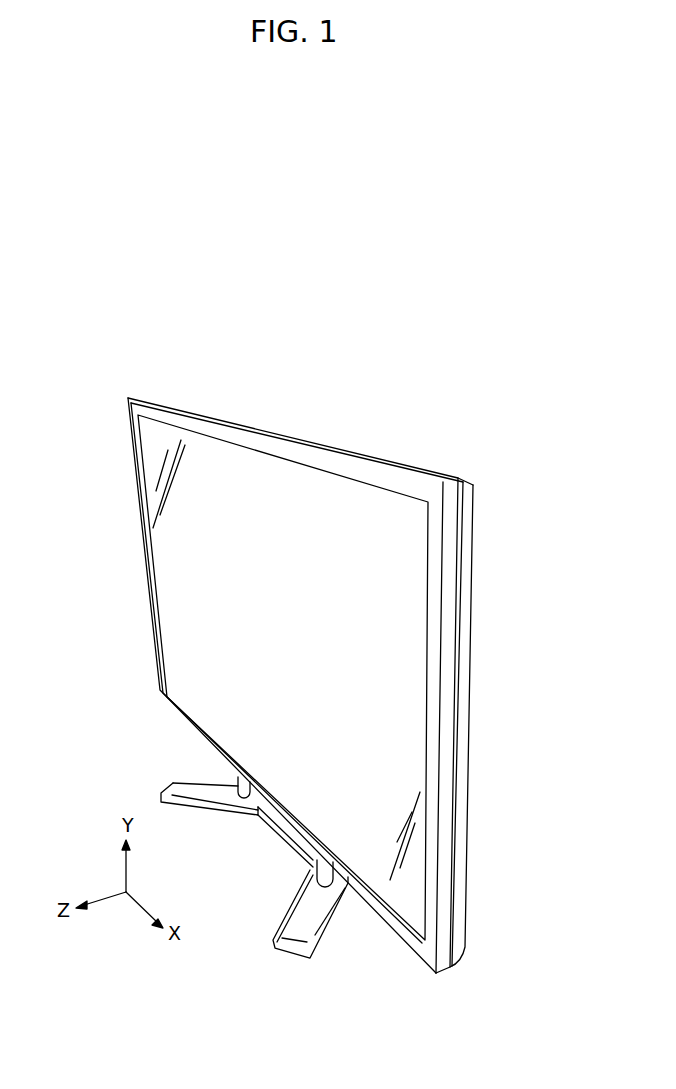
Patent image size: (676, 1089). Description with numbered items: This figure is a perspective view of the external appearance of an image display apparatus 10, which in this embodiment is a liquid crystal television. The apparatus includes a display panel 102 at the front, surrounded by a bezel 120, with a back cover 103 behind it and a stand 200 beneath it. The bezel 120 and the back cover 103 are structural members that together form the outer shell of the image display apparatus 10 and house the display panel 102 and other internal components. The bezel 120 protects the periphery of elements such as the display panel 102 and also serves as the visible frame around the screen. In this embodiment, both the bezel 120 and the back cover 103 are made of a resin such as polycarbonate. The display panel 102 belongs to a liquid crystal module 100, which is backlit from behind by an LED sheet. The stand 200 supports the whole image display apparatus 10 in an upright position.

The image display apparatus 10 is at (368, 407).
The liquid crystal module 100 is at (302, 492).
The display panel 102 is at (247, 476).
The back cover 103 is at (463, 481).
The bezel 120 is at (401, 468).
The stand 200 is at (187, 785).